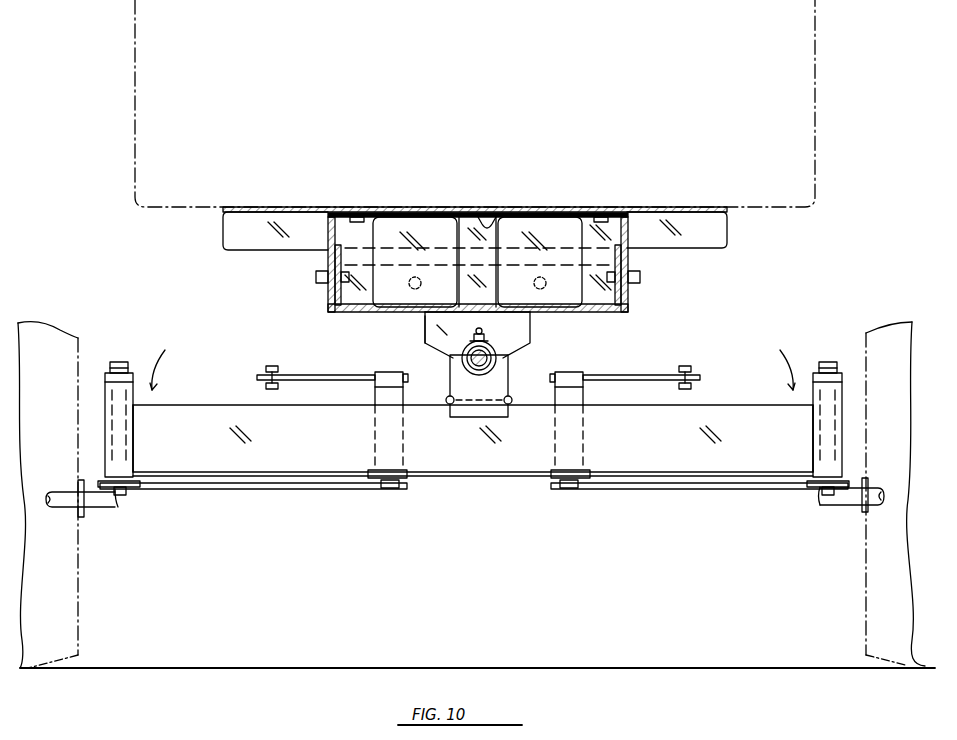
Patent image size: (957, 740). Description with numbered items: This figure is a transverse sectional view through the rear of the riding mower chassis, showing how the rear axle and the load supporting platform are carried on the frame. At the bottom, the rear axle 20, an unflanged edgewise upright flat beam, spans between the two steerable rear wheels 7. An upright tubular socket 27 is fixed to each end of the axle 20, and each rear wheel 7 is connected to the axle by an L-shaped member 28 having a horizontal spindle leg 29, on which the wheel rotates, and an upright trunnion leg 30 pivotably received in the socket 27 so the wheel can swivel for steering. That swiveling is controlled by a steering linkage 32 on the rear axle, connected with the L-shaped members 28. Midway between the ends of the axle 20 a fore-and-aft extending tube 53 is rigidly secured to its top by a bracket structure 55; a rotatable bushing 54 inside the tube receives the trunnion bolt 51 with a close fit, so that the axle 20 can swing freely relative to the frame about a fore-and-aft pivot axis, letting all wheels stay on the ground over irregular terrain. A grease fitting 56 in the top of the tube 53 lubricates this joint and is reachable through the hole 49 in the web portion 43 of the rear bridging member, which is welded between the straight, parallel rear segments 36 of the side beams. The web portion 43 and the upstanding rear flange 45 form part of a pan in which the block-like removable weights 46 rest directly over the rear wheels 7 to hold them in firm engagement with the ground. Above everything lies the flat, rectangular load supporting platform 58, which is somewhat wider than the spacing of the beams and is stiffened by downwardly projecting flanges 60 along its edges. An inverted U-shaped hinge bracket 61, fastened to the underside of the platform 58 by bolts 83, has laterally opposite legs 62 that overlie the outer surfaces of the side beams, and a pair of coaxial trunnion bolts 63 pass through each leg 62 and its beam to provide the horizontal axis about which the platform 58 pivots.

The steerable rear wheel 7 is at (78, 615).
The rear axle 20 is at (338, 450).
The tubular socket 27 is at (135, 405).
The L-shaped member 28 is at (128, 500).
The spindle leg 29 is at (108, 508).
The trunnion leg 30 is at (133, 442).
The steering linkage 32 is at (672, 335).
The rear segment 36 is at (330, 308).
The web portion 43 is at (338, 302).
The rear flange 45 is at (620, 258).
The removable weight 46 is at (485, 217).
The hole 49 is at (422, 313).
The trunnion bolt 51 is at (497, 349).
The tube 53 is at (462, 348).
The rotatable bushing 54 is at (458, 356).
The bracket structure 55 is at (450, 385).
The grease fitting 56 is at (493, 330).
The load supporting platform 58 is at (262, 207).
The flange 60 is at (223, 231).
The hinge bracket 61 is at (323, 242).
The leg 62 is at (330, 217).
The trunnion bolt 63 is at (316, 277).
The bolt 83 is at (357, 213).